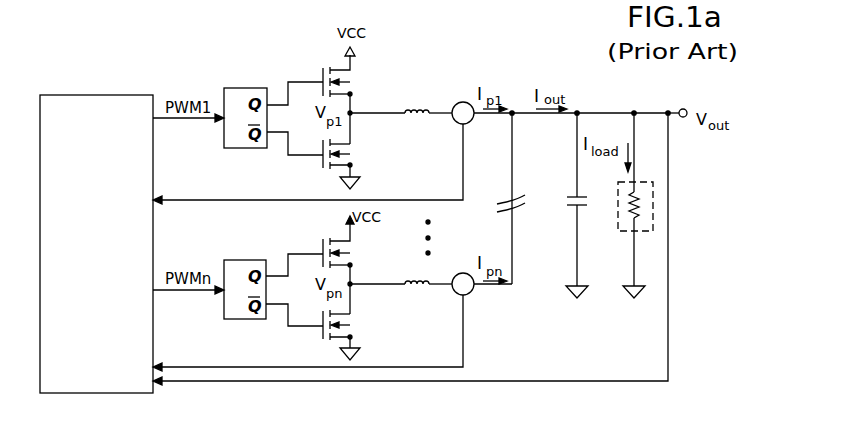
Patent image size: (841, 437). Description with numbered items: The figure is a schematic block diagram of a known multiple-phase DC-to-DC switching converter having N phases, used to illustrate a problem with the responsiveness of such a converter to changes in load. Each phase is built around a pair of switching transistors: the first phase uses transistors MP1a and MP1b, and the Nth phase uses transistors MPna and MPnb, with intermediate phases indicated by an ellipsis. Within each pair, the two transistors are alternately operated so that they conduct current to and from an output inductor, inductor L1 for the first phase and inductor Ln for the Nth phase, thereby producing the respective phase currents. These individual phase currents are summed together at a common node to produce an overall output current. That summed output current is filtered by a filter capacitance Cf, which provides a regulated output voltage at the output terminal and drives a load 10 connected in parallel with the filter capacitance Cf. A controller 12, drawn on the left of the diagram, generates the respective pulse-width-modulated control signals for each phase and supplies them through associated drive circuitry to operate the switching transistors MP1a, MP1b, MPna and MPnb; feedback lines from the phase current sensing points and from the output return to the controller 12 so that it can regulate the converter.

The controller 12 is at (92, 95).
The load 10 is at (626, 231).
The switching transistor MP1a is at (362, 76).
The switching transistor MP1b is at (362, 158).
The switching transistor MPna is at (362, 245).
The switching transistor MPnb is at (362, 329).
The output inductor L1 is at (417, 125).
The output inductor Ln is at (416, 296).
The filter capacitance Cf is at (581, 204).